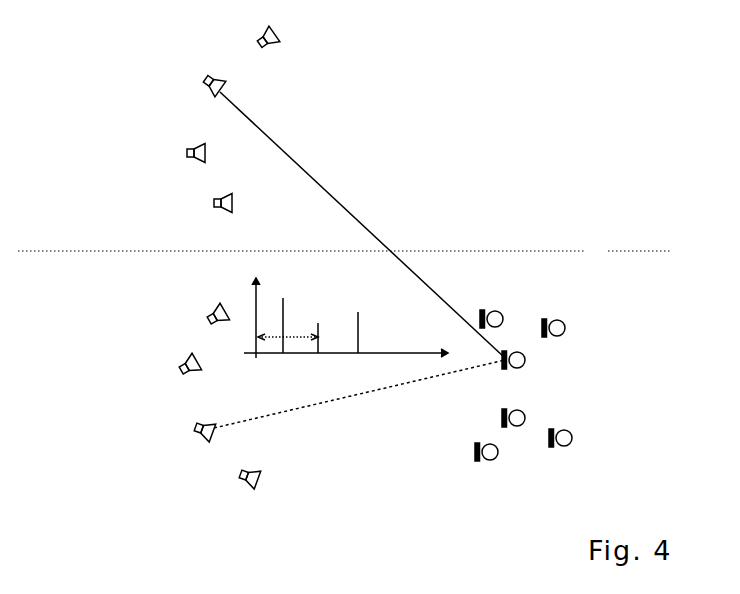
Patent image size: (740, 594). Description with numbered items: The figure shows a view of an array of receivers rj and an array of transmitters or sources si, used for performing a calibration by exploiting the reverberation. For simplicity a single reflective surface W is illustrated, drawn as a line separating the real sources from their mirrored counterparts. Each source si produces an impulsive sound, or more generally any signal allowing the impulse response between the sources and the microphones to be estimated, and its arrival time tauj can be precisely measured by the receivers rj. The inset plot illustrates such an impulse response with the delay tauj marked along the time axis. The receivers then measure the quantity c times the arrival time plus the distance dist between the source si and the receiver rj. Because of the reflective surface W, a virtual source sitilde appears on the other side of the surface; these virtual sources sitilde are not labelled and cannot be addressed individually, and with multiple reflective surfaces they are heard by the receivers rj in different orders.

The virtual source sitilde is at (352, 200).
The source si is at (341, 401).
The receiver rj is at (504, 372).
The reflective surface W is at (345, 270).
The arrival time tauj is at (346, 318).
The distance between source and receiver dist is at (350, 447).